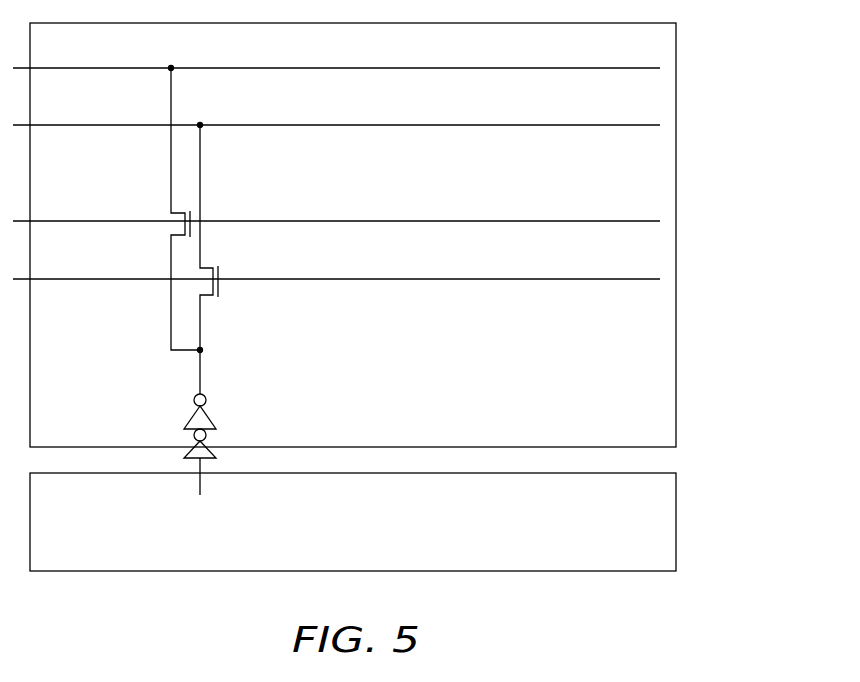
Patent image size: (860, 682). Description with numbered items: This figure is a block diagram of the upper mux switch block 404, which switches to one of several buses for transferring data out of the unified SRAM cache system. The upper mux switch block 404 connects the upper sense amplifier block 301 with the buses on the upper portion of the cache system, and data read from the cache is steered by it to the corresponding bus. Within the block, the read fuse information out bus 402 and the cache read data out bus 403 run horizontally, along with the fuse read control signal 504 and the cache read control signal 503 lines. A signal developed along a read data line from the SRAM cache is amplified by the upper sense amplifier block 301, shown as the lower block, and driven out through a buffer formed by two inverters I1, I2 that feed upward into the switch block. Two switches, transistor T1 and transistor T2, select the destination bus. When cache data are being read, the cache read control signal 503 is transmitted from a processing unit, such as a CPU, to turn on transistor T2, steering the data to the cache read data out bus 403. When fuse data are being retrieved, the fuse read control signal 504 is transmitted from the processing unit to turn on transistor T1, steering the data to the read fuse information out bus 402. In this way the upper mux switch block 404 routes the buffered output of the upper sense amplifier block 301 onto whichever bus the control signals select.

The read fuse information out bus 402 is at (658, 68).
The cache read data out bus 403 is at (645, 125).
The fuse read control signal 504 is at (642, 221).
The cache read control signal 503 is at (630, 279).
The upper mux switch block 404 is at (630, 418).
The upper sense amplifier block 301 is at (640, 524).
The transistor T1 is at (178, 218).
The transistor T2 is at (221, 290).
The inverter I1 is at (197, 412).
The inverter I2 is at (192, 441).